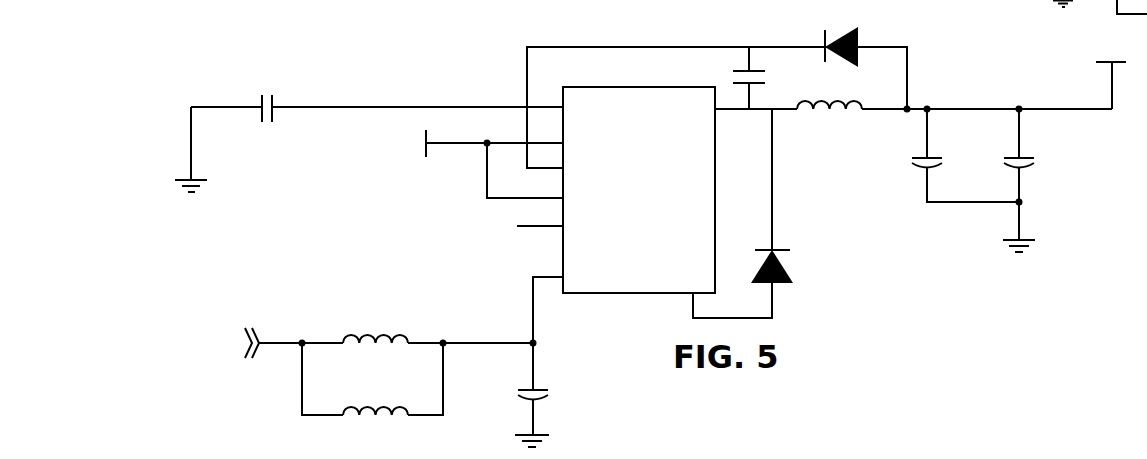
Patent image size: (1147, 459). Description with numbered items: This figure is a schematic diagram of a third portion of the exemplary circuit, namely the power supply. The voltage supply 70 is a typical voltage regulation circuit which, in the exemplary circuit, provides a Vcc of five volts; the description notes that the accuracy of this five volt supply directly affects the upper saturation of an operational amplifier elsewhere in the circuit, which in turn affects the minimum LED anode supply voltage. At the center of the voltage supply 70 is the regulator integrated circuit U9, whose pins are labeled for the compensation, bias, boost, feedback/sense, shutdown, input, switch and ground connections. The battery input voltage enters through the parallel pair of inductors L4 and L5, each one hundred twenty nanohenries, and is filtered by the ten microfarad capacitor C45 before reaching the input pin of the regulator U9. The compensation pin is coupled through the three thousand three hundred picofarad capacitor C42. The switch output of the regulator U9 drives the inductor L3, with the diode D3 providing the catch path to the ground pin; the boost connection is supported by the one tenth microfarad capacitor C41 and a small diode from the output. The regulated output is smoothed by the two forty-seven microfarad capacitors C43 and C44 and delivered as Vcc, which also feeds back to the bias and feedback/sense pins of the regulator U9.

The voltage supply 70 is at (903, 314).
The capacitor C42 is at (369, 136).
The switching regulator U9 is at (638, 203).
The inductor L3 is at (913, 122).
The capacitor C41 is at (772, 78).
The diode D3 is at (761, 213).
The capacitor C43 is at (965, 155).
The capacitor C44 is at (1042, 180).
The inductor L4 is at (438, 320).
The inductor L5 is at (372, 379).
The capacitor C45 is at (554, 416).